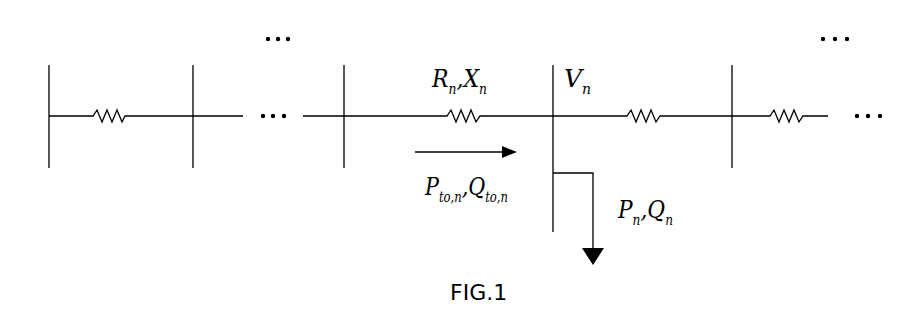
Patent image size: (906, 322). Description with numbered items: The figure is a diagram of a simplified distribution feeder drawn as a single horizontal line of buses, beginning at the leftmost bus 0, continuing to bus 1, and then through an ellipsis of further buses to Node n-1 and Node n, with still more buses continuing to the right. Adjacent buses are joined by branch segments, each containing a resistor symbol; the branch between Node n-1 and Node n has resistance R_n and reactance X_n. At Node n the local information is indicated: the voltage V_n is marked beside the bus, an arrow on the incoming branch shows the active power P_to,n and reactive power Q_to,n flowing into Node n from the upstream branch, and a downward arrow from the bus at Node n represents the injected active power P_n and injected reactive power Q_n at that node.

The bus 0 (source bus) 0 is at (48, 96).
The bus 1 is at (192, 96).
The Node n−1 n-1 is at (345, 96).
The Node n is at (557, 128).